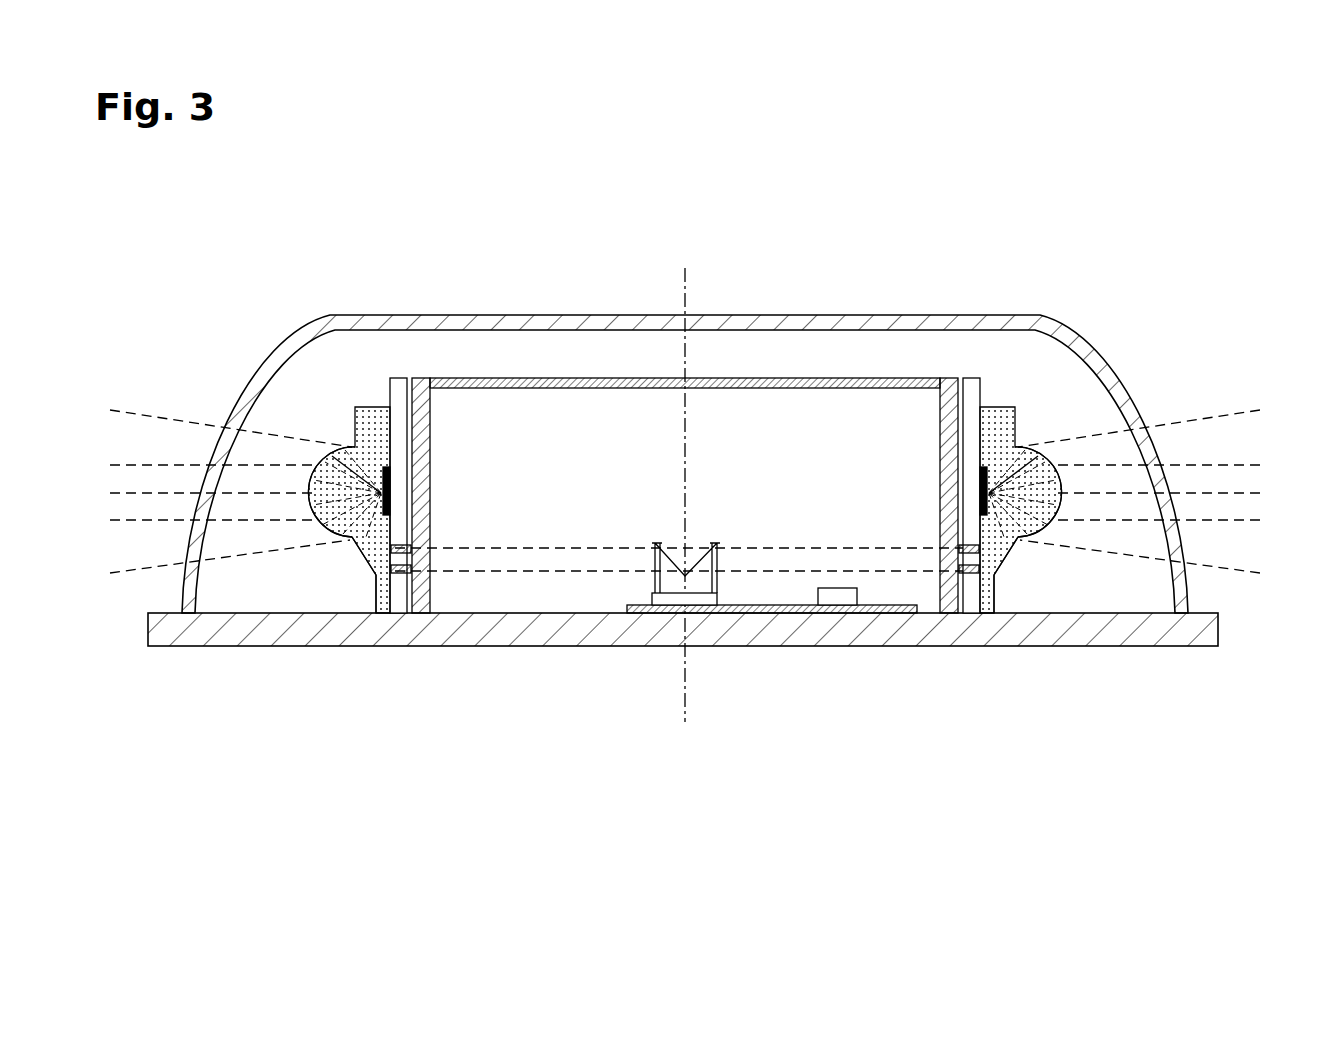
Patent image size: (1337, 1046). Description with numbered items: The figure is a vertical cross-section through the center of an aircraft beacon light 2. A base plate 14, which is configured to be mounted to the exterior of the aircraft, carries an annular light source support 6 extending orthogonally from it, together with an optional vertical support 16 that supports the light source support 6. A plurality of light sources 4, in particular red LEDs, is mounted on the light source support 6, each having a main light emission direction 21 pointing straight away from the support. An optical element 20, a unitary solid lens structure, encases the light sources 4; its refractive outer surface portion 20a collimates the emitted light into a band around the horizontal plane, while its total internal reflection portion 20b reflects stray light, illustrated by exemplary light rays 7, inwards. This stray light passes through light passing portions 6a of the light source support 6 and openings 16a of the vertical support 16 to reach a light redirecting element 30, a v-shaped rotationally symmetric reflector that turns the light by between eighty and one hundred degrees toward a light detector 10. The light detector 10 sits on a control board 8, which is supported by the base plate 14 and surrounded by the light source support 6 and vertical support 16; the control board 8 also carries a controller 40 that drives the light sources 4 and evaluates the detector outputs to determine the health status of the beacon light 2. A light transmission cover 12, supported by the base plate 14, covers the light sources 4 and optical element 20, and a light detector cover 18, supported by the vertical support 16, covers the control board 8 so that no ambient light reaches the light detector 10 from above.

The aircraft beacon light 2 is at (1102, 296).
The light source 4 is at (383, 494).
The light source support 6 is at (398, 378).
The light passing portion 6a is at (405, 551).
The light ray 7 is at (362, 556).
The control board 8 is at (745, 612).
The light detector 10 is at (663, 600).
The light transmission cover 12 is at (876, 326).
The base plate 14 is at (908, 630).
The vertical support 16 is at (418, 386).
The opening 16a is at (425, 568).
The light detector cover 18 is at (515, 385).
The optical element 20 is at (345, 437).
The refractive outer surface portion 20a is at (318, 460).
The total internal reflection portion 20b is at (368, 556).
The main light emission direction 21 is at (135, 486).
The light redirecting element 30 is at (724, 530).
The controller 40 is at (838, 596).